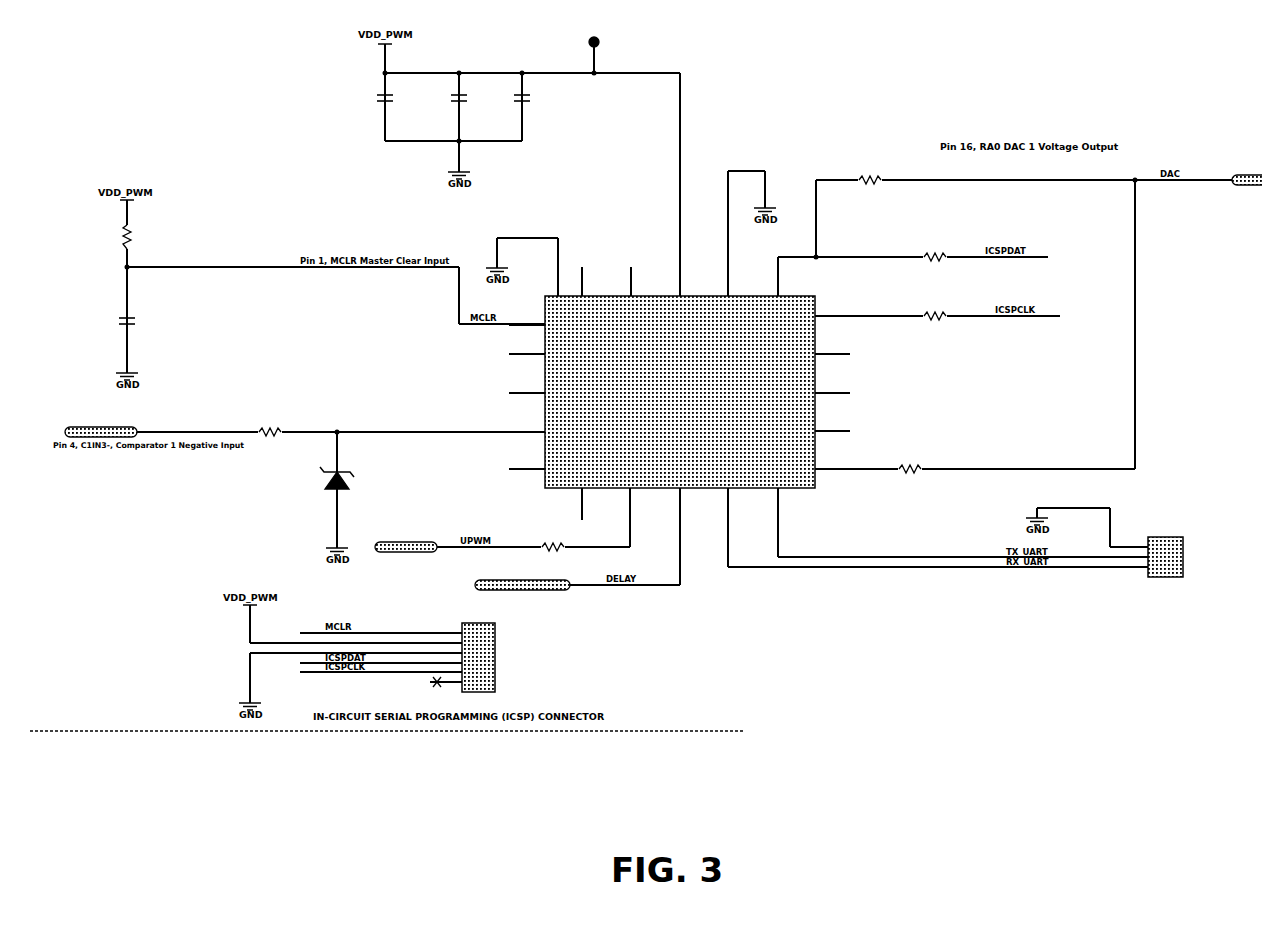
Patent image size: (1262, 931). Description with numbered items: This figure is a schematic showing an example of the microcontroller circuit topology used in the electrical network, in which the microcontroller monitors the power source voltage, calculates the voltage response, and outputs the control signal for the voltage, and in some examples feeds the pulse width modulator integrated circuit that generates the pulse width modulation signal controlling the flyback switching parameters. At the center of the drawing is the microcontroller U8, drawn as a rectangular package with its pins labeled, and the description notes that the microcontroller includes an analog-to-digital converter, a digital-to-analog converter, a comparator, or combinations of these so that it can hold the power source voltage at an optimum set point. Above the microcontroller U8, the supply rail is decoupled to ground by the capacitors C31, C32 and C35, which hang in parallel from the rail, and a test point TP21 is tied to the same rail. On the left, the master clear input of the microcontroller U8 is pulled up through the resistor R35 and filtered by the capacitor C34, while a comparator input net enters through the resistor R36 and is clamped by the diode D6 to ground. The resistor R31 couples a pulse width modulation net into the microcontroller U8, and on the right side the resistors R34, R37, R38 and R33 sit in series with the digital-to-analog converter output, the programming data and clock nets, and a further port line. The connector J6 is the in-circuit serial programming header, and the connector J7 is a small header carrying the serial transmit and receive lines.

The microcontroller PIC16LF1769 U8 is at (725, 391).
The capacitor C31 is at (395, 107).
The capacitor C32 is at (469, 107).
The capacitor C34 is at (138, 330).
The capacitor C35 is at (533, 107).
The resistor R31 is at (571, 543).
The resistor R33 is at (910, 461).
The resistor R34 is at (880, 181).
The resistor R35 is at (147, 237).
The resistor R36 is at (270, 428).
The resistor R37 is at (935, 312).
The resistor R38 is at (935, 253).
The zener diode D6 is at (361, 475).
The test point TP21 is at (609, 45).
The ICSP connector J6 is at (478, 651).
The UART header J7 is at (1168, 557).